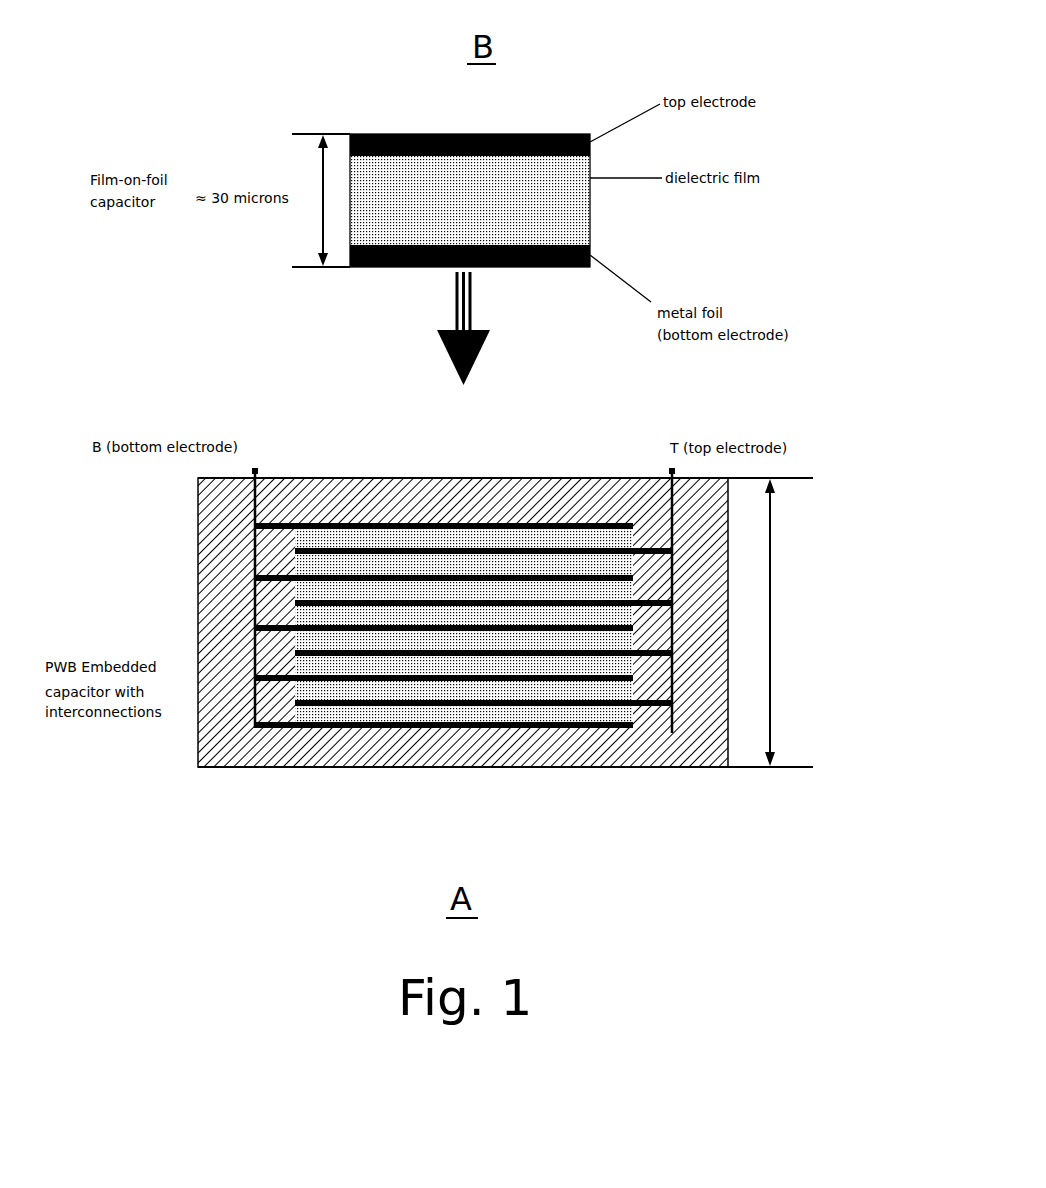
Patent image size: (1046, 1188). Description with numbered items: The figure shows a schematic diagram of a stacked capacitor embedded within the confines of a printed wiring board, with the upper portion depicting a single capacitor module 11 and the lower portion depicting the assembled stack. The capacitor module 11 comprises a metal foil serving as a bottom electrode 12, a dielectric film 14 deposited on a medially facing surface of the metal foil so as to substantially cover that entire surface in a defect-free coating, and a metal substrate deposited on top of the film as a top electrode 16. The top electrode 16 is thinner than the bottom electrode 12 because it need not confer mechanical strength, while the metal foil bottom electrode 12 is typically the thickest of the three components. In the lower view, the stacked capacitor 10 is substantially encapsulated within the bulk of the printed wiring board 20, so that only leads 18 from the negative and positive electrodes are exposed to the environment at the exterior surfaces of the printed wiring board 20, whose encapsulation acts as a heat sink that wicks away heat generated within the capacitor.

The stacked capacitor 10 is at (580, 612).
The capacitor module 11 is at (472, 154).
The bottom electrode 12 is at (390, 268).
The dielectric film 14 is at (578, 200).
The top electrode 16 is at (385, 138).
The leads 18 is at (675, 470).
The printed wiring board 20 is at (200, 768).